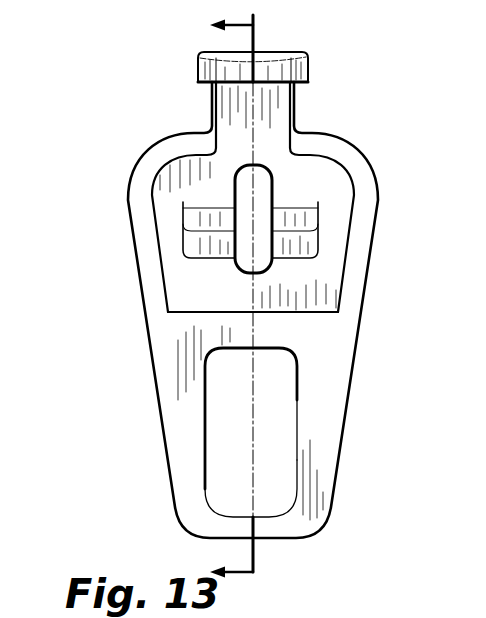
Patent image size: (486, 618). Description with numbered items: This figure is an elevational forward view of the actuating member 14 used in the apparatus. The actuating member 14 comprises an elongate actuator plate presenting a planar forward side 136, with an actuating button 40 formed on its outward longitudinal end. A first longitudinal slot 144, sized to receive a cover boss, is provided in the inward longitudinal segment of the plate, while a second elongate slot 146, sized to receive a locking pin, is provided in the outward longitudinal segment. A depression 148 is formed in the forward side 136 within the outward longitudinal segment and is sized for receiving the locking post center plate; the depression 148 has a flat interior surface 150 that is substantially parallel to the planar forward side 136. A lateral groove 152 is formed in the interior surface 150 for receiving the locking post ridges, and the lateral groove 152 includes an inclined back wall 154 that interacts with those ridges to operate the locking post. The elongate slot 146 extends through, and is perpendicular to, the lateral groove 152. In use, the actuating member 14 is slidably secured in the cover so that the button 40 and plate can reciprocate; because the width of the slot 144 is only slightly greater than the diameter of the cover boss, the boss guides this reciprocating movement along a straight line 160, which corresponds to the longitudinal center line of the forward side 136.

The actuating member 14 is at (122, 77).
The actuating button 40 is at (308, 60).
The planar forward side 136 is at (183, 352).
The first longitudinal slot 144 is at (288, 448).
The second elongate slot 146 is at (270, 180).
The depression 148 is at (305, 282).
The flat interior surface 150 is at (202, 282).
The lateral groove 152 is at (302, 245).
The inclined back wall 154 is at (208, 220).
The straight line 160 is at (253, 472).